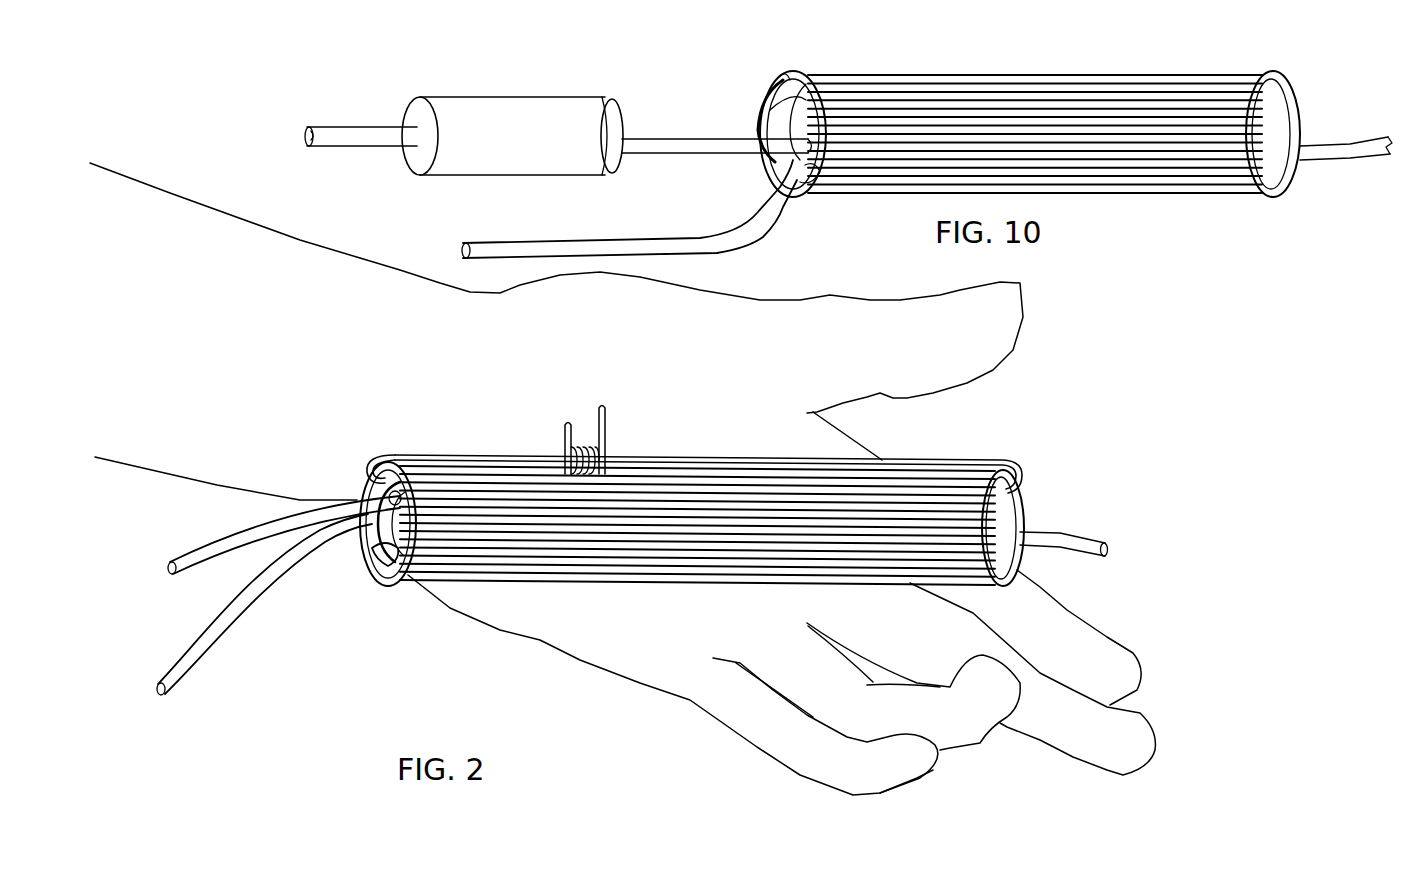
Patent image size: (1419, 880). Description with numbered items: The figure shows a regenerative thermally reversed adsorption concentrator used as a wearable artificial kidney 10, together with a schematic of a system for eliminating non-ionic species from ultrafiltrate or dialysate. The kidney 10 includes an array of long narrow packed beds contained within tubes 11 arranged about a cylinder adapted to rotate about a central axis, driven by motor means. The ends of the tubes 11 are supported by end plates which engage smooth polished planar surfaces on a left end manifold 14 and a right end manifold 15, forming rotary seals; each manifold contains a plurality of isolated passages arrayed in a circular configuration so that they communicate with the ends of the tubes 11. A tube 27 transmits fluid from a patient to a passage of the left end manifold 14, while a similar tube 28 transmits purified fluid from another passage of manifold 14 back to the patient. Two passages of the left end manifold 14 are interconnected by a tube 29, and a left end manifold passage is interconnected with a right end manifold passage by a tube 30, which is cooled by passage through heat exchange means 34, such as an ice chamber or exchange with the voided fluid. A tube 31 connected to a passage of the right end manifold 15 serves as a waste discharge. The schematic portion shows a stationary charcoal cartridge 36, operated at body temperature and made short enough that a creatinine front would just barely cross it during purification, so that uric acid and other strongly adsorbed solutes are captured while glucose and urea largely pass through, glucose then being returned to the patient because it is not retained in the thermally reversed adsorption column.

In FIG. 10, the wearable artificial kidney 10 is at (1037, 107).
In FIG. 2, the wearable artificial kidney 10 is at (686, 547).
In FIG. 10, the tubes 11 is at (1135, 88).
In FIG. 2, the tubes 11 is at (697, 568).
In FIG. 10, the left end manifold 14 is at (777, 112).
In FIG. 2, the left end manifold 14 is at (388, 548).
In FIG. 10, the right end manifold 15 is at (1295, 85).
In FIG. 2, the right end manifold 15 is at (1020, 507).
In FIG. 10, the tube 27 is at (360, 147).
In FIG. 2, the tube 27 is at (195, 685).
In FIG. 10, the tube 28 is at (720, 260).
In FIG. 2, the tube 28 is at (195, 565).
In FIG. 2, the tube 29 is at (360, 560).
In FIG. 2, the tube 30 is at (965, 455).
In FIG. 10, the tube 31 is at (1345, 150).
In FIG. 2, the tube 31 is at (1070, 537).
In FIG. 2, the heat exchange means 34 is at (605, 425).
In FIG. 10, the stationary charcoal cartridge 36 is at (503, 97).